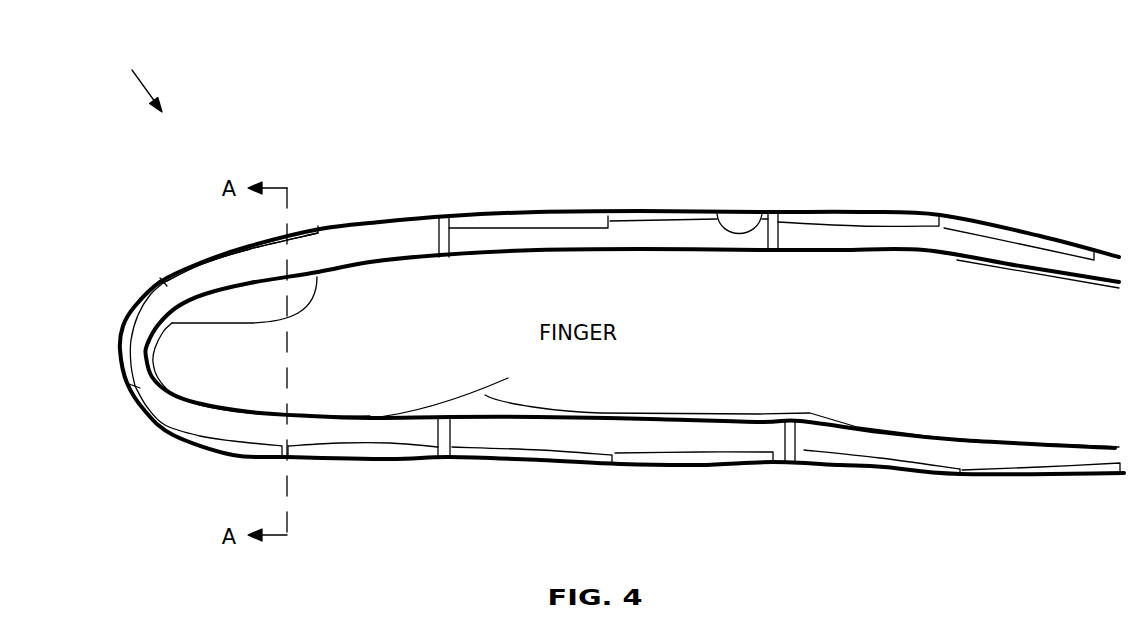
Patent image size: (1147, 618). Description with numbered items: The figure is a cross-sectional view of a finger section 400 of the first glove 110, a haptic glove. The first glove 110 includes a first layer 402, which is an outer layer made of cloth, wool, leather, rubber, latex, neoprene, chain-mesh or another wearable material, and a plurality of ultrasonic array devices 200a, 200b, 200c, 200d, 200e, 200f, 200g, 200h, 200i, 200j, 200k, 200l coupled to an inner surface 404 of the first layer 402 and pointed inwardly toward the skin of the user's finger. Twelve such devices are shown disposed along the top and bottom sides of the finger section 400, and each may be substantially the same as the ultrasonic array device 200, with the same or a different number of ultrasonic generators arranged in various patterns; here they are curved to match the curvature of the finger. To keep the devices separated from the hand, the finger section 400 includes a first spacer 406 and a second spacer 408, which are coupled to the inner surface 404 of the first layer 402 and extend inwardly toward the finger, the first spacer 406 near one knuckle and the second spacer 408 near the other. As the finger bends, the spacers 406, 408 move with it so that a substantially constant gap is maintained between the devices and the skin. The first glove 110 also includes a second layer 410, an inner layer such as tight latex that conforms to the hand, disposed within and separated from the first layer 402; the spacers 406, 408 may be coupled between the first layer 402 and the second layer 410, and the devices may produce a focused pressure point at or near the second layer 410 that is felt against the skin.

The first glove 110 is at (126, 80).
The ultrasonic array device 200 is at (382, 220).
The ultrasonic array device 200a is at (1019, 472).
The ultrasonic array device 200b is at (885, 466).
The ultrasonic array device 200c is at (659, 460).
The ultrasonic array device 200d is at (560, 456).
The ultrasonic array device 200e is at (338, 447).
The ultrasonic array device 200f is at (173, 431).
The ultrasonic array device 200g is at (163, 282).
The ultrasonic array device 200h is at (320, 231).
The ultrasonic array device 200i is at (547, 218).
The ultrasonic array device 200j is at (683, 213).
The ultrasonic array device 200k is at (866, 213).
The ultrasonic array device 200l is at (1017, 230).
The finger section 400 is at (959, 120).
The first layer 402 is at (475, 214).
The inner surface 404 is at (762, 213).
The first spacer 406 is at (789, 461).
The second spacer 408 is at (452, 455).
The second layer 410 is at (220, 409).